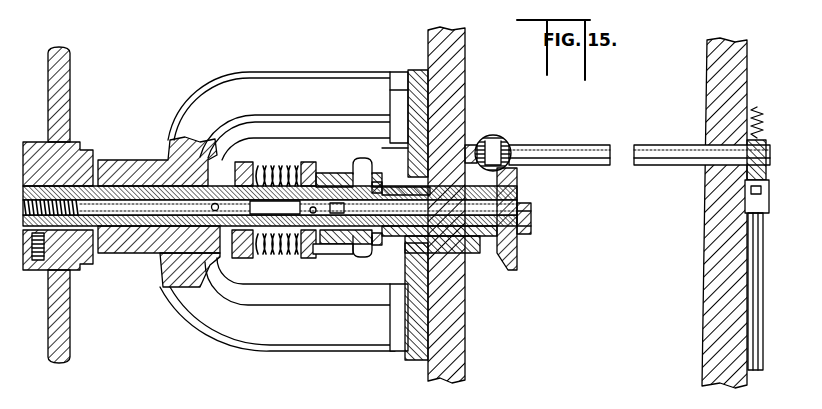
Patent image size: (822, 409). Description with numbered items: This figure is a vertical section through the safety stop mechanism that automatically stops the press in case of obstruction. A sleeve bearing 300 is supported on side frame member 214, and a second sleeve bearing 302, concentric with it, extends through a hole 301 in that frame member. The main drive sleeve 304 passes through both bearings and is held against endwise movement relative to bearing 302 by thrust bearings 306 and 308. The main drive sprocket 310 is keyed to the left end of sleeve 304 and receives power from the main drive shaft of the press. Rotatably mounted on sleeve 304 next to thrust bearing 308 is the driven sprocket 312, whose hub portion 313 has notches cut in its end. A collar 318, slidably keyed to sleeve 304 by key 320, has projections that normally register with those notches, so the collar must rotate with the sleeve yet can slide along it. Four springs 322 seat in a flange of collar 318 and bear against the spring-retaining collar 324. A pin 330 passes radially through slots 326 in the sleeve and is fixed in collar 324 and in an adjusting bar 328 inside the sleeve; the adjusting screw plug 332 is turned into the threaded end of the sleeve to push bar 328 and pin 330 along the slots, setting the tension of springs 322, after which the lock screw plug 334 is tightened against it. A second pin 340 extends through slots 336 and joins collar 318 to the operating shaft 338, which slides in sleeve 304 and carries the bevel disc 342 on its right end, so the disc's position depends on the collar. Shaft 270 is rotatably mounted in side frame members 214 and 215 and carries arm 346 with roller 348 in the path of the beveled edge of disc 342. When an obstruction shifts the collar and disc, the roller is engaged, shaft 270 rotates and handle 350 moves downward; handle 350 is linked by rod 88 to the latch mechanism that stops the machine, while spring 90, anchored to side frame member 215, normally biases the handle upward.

The rod 88 is at (759, 340).
The spring 90 is at (758, 106).
The side frame member 214 is at (450, 53).
The side frame member 215 is at (728, 70).
The shaft 270 is at (642, 150).
The sleeve bearing 300 is at (138, 172).
The hole 301 is at (445, 260).
The sleeve bearing 302 is at (400, 246).
The main drive sleeve 304 is at (126, 244).
The thrust bearing 306 is at (480, 258).
The thrust bearing 308 is at (380, 184).
The main drive sprocket 310 is at (60, 316).
The driven sprocket 312 is at (362, 258).
The hub portion 313 is at (343, 248).
The collar 318 is at (306, 164).
The key 320 is at (322, 250).
The springs 322 is at (270, 166).
The spring-retaining collar 324 is at (242, 162).
The slots 326 is at (260, 238).
The adjusting bar 328 is at (190, 168).
The pin 330 is at (242, 212).
The adjusting screw plug 332 is at (72, 180).
The lock screw plug 334 is at (40, 215).
The slots 336 is at (297, 236).
The operating shaft 338 is at (351, 212).
The pin 340 is at (315, 212).
The bevel disc 342 is at (522, 228).
The arm 346 is at (512, 148).
The roller 348 is at (486, 138).
The handle 350 is at (768, 144).